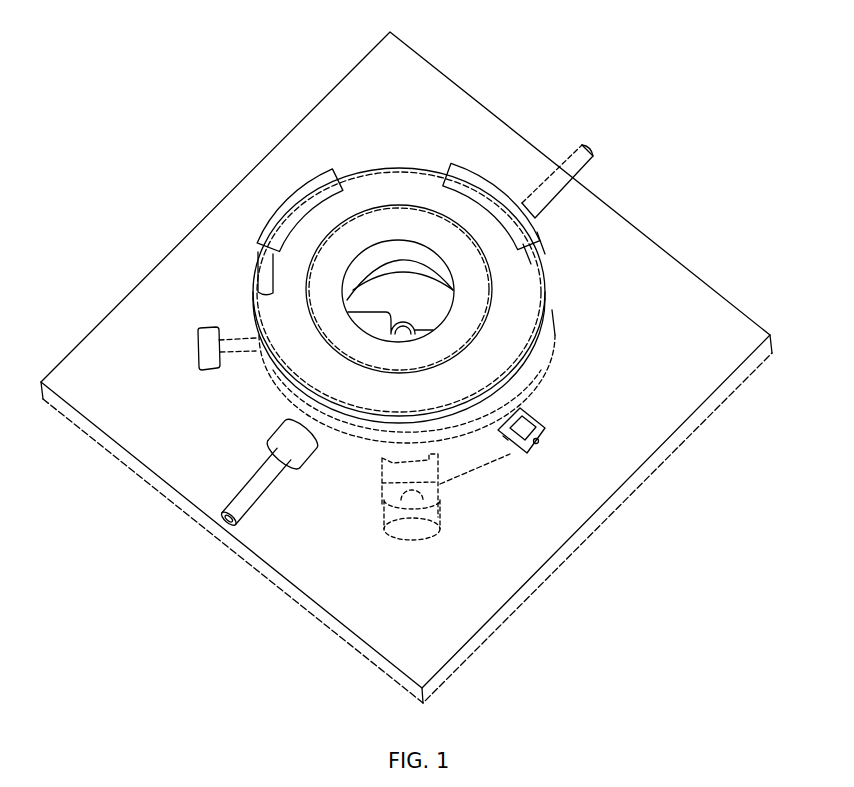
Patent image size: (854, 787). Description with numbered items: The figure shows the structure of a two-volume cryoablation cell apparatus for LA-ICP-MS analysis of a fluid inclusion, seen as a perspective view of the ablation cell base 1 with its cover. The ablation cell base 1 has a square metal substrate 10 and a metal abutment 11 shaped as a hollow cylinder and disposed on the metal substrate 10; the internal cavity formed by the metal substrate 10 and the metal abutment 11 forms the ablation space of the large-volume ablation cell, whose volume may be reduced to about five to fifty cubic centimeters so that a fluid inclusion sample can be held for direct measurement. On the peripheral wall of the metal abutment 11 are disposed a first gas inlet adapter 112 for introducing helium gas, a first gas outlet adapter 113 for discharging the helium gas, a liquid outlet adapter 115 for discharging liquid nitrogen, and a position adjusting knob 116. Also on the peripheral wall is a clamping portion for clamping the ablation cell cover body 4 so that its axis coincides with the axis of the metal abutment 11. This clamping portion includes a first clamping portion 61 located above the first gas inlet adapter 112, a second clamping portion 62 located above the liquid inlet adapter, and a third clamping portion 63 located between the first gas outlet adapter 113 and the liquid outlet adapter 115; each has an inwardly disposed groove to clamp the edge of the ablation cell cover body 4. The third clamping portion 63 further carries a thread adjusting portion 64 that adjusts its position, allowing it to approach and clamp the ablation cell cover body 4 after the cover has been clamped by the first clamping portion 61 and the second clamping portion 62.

The ablation cell base 1 is at (707, 253).
The metal substrate 10 is at (697, 370).
The metal abutment 11 is at (560, 325).
The ablation cell cover body 4 is at (373, 187).
The first clamping portion 61 is at (472, 167).
The second clamping portion 62 is at (310, 197).
The third clamping portion 63 is at (440, 462).
The thread adjusting portion 64 is at (440, 514).
The first gas inlet adapter 112 is at (584, 157).
The first gas outlet adapter 113 is at (227, 506).
The liquid outlet adapter 115 is at (540, 436).
The position adjusting knob 116 is at (200, 337).